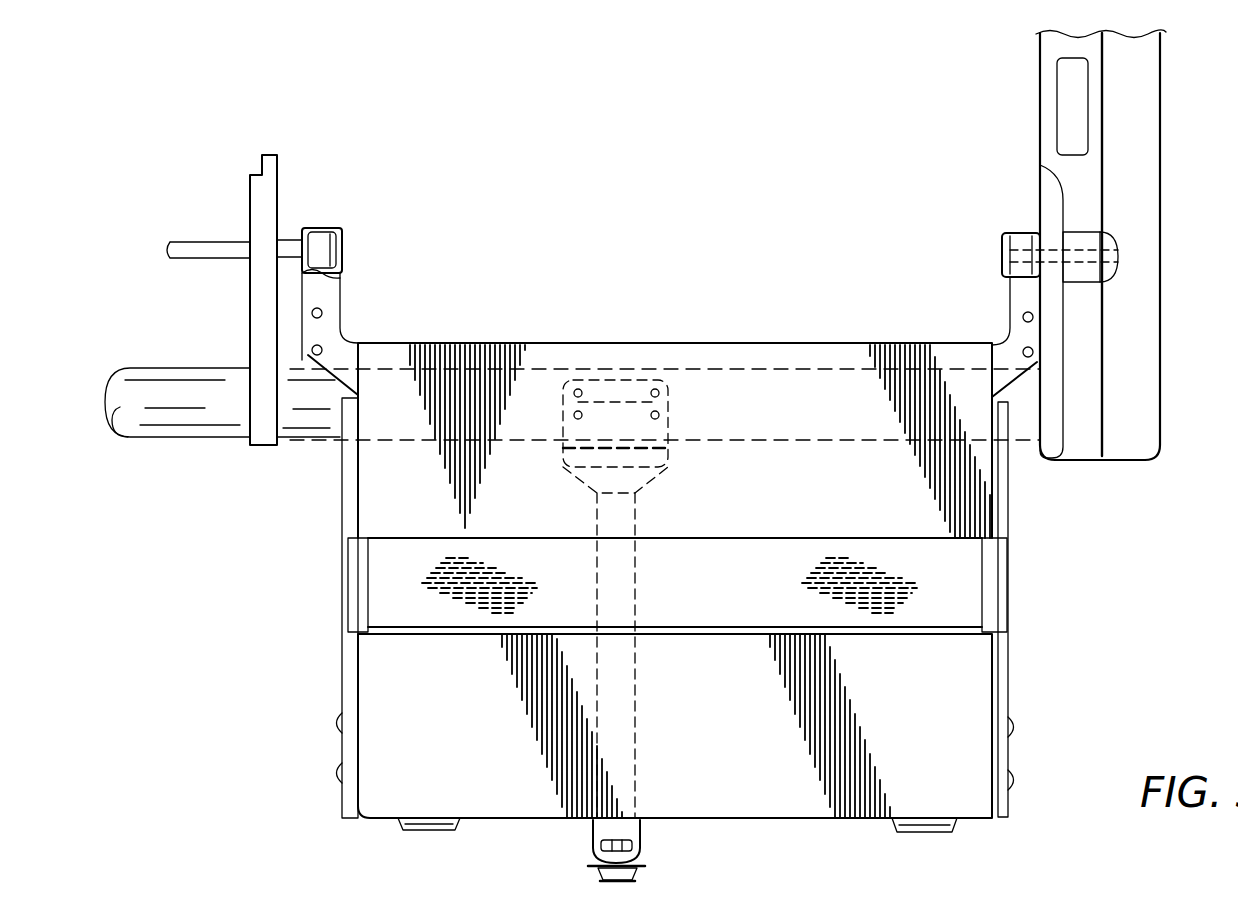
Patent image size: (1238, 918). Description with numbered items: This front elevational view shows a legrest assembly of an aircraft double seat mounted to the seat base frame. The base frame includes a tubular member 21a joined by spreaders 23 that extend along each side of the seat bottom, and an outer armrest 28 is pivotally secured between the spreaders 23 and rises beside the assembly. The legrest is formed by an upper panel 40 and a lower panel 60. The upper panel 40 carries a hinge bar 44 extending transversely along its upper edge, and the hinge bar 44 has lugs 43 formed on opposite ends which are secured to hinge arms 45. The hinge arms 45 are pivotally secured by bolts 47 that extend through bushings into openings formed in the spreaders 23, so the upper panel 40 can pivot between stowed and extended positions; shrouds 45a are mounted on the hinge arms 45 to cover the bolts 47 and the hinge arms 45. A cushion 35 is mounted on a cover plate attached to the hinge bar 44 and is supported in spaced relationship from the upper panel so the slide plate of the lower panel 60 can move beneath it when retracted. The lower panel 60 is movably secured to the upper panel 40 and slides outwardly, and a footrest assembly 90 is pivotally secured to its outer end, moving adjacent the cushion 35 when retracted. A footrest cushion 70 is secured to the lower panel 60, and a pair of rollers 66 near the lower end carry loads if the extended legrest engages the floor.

The outer armrest 28 is at (1140, 130).
The spreader 23 is at (258, 240).
The hinge arm 45 is at (315, 240).
The bolt 47 is at (345, 241).
The shroud 45a is at (318, 281).
The lug 43 is at (330, 323).
The tubular member 21a is at (235, 415).
The hinge bar 44 is at (455, 352).
The upper panel 40 is at (365, 481).
The cushion 35 is at (348, 522).
The footrest assembly 90 is at (806, 560).
The lower panel 60 is at (381, 661).
The footrest cushion 70 is at (970, 660).
The roller 66 is at (437, 829).